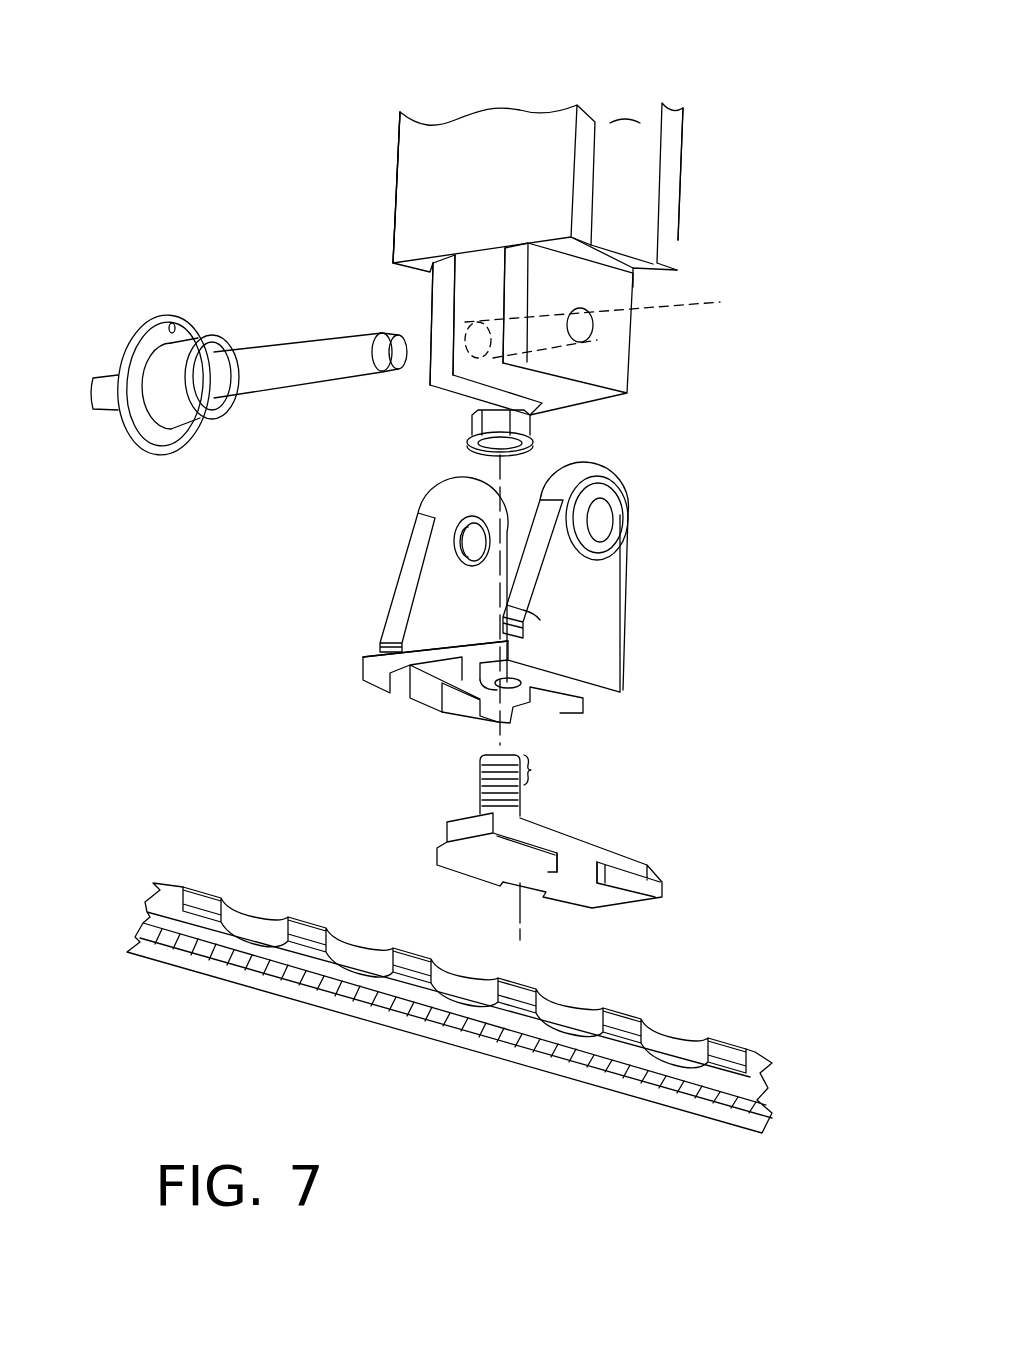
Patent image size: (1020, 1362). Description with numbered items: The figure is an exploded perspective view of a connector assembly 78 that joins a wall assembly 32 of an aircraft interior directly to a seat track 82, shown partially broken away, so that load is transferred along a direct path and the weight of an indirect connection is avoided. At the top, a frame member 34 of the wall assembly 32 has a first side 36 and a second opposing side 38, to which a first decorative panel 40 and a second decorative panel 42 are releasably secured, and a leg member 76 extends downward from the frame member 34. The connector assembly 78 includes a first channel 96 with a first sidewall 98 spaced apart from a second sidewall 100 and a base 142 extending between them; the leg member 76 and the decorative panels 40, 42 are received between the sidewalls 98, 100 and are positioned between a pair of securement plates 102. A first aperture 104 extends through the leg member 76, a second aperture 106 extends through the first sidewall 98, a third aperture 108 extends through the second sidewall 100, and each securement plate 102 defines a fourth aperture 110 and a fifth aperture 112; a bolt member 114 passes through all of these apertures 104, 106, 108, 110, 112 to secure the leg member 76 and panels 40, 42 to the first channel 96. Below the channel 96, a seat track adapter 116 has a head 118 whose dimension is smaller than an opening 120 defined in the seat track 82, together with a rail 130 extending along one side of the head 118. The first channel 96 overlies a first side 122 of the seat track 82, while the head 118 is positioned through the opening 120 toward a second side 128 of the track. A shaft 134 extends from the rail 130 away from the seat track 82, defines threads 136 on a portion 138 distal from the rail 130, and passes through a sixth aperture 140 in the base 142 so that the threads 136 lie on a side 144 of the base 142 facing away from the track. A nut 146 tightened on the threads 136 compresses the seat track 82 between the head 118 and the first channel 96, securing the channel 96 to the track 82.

The wall assembly 32 is at (766, 55).
The frame member 34 is at (627, 180).
The first side 36 is at (593, 163).
The second opposing side 38 is at (660, 133).
The first decorative panel 40 is at (428, 165).
The second decorative panel 42 is at (680, 212).
The leg member 76 is at (545, 397).
The connector assembly 78 is at (576, 592).
The seat track 82 is at (415, 967).
The first channel 96 is at (593, 620).
The first sidewall 98 is at (588, 585).
The second sidewall 100 is at (418, 558).
The pair of securement plates 102 is at (515, 303).
The first aperture 104 is at (487, 352).
The second aperture 106 is at (610, 513).
The third aperture 108 is at (472, 563).
The fourth aperture 110 is at (583, 327).
The fifth aperture 112 is at (462, 330).
The bolt member 114 is at (247, 345).
The seat track adapter 116 is at (596, 852).
The head 118 is at (540, 848).
The opening 120 is at (415, 1008).
The first side 122 is at (310, 920).
The second side 128 is at (193, 918).
The rail 130 is at (582, 862).
The shaft 134 is at (487, 785).
The threads 136 is at (487, 765).
The portion 138 is at (533, 768).
The sixth aperture 140 is at (497, 695).
The base 142 is at (440, 652).
The side 144 is at (457, 642).
The nut 146 is at (520, 426).